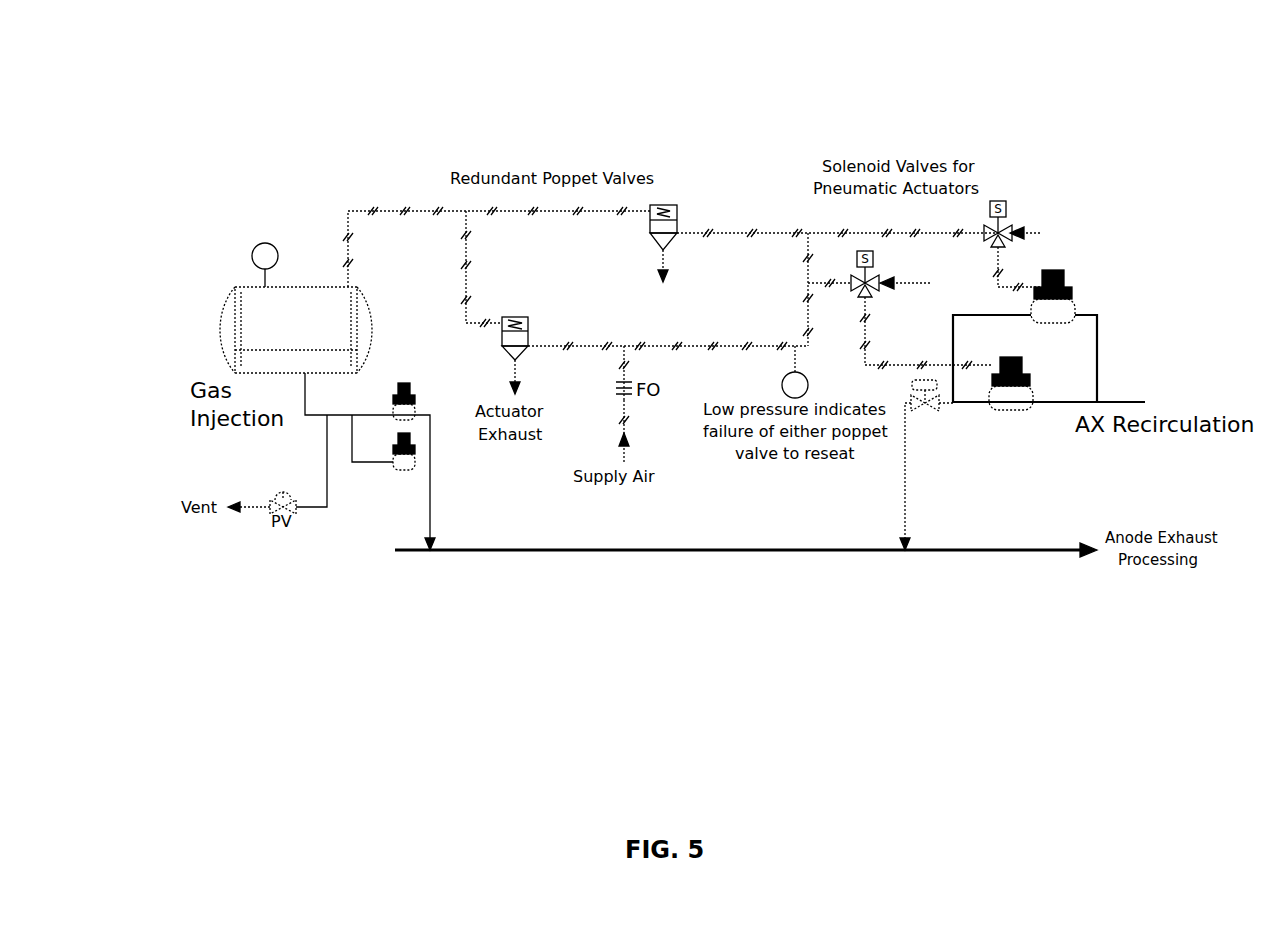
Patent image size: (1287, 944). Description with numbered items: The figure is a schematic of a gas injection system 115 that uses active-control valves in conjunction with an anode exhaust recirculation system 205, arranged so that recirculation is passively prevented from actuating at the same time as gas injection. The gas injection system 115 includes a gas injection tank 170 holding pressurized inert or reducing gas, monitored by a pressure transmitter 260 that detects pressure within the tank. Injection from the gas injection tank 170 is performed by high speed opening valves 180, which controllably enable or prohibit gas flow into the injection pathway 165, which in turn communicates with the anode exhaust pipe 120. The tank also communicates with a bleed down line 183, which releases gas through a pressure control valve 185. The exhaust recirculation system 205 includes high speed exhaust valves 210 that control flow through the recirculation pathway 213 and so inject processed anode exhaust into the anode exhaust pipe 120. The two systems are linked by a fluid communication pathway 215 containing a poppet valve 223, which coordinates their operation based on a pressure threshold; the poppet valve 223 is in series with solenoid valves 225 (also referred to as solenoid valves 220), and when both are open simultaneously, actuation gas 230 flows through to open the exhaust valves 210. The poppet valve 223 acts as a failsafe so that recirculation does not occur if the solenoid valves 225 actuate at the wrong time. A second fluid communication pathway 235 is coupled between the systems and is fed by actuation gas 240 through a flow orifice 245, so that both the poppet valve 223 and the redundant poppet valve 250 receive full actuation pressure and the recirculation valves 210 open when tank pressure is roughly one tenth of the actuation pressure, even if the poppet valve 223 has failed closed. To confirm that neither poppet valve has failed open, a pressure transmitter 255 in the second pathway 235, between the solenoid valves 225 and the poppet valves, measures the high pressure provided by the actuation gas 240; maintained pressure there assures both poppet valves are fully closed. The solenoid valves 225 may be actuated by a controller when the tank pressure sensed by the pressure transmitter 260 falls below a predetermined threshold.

The gas injection system 115 is at (163, 373).
The anode exhaust pipe 120 is at (973, 552).
The injection pathway 165 is at (432, 505).
The gas injection tank 170 is at (316, 287).
The high speed opening valves 180 is at (395, 415).
The bleed down line 183 is at (327, 508).
The pressure control valve 185 is at (277, 503).
The anode exhaust recirculation system 205 is at (1190, 168).
The high speed exhaust valves 210 is at (1028, 378).
The recirculation pathway 213 is at (907, 490).
The fluid communication pathway 215 is at (383, 211).
The solenoid valves 220 is at (940, 404).
The poppet valve 223 is at (668, 205).
The solenoid valves 225 is at (1005, 206).
The actuation gas 230 is at (890, 283).
The second fluid communication pathway 235 is at (707, 348).
The actuation gas 240 is at (630, 455).
The flow orifice 245 is at (617, 398).
The redundant poppet valve 250 is at (523, 348).
The pressure transmitter 255 is at (795, 372).
The pressure transmitter 260 is at (262, 243).